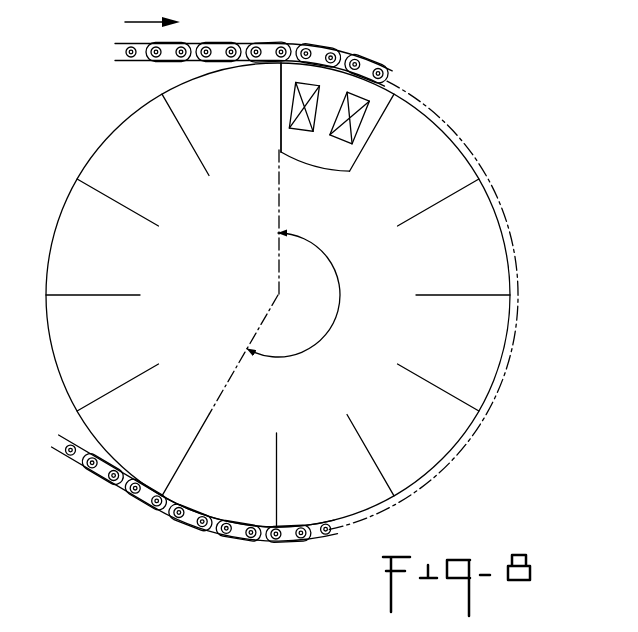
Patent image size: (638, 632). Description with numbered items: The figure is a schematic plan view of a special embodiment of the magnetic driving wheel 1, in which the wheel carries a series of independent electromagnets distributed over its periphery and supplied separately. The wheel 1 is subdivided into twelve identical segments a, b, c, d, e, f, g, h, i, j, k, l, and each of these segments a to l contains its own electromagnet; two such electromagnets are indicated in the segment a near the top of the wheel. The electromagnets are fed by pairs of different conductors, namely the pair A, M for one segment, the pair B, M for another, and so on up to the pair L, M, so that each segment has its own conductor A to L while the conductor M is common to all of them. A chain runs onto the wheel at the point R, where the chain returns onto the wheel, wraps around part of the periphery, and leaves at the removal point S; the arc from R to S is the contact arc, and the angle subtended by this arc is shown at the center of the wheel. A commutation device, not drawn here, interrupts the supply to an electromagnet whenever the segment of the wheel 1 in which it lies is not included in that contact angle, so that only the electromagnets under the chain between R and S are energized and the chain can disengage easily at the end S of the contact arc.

The magnetic driving wheel 1 is at (430, 433).
The wheel segment a is at (373, 100).
The wheel segment b is at (432, 200).
The wheel segment c is at (461, 271).
The wheel segment d is at (438, 365).
The wheel segment e is at (370, 437).
The wheel segment f is at (296, 472).
The wheel segment g is at (236, 435).
The wheel segment h is at (130, 387).
The wheel segment i is at (95, 320).
The wheel segment j is at (117, 226).
The wheel segment k is at (184, 148).
The wheel segment l is at (241, 136).
The chain return point R is at (267, 107).
The chain removal point S is at (186, 458).
The supply conductor A is at (302, 143).
The supply conductor B is at (371, 178).
The supply conductor L is at (227, 153).
The common conductor M is at (258, 145).